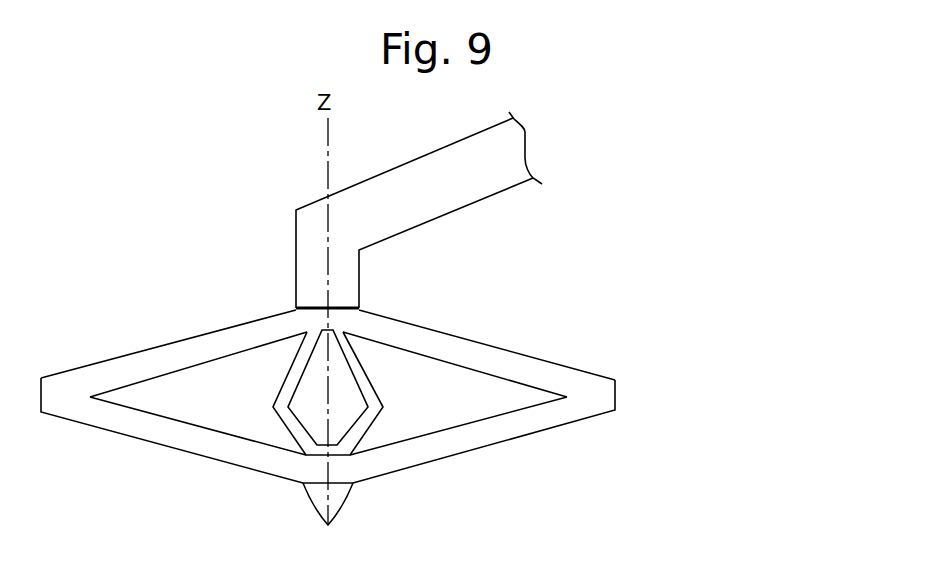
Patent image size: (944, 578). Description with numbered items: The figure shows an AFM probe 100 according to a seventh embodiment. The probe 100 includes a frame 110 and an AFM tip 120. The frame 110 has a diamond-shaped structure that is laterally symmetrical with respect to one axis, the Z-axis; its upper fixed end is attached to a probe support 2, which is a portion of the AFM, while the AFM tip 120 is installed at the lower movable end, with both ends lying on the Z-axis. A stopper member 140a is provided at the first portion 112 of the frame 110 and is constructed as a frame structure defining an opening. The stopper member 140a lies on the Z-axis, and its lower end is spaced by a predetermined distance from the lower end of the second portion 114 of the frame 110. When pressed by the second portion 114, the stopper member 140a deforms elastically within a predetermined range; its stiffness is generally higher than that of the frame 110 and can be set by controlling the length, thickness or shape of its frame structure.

The probe support 2 is at (449, 151).
The AFM probe 100 is at (443, 372).
The frame 110 is at (443, 396).
The first portion 112 is at (590, 373).
The second portion 114 is at (592, 414).
The stopper member 140a is at (360, 368).
The AFM tip 120 is at (343, 501).